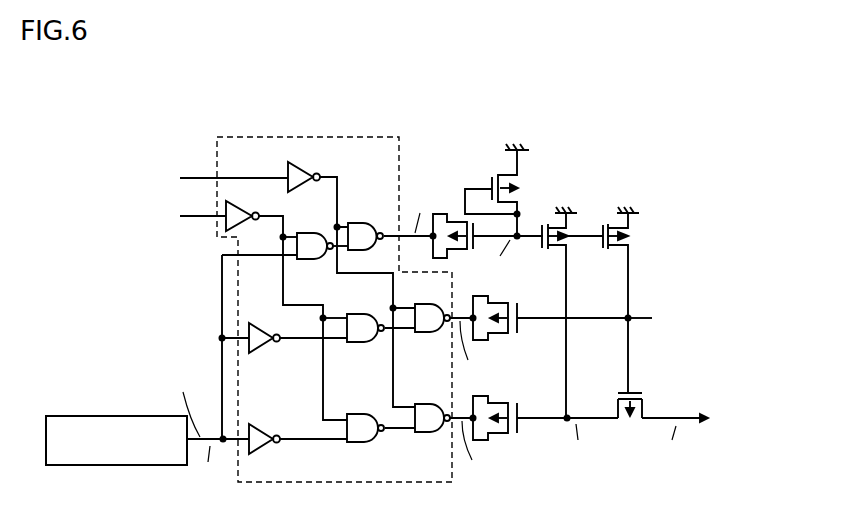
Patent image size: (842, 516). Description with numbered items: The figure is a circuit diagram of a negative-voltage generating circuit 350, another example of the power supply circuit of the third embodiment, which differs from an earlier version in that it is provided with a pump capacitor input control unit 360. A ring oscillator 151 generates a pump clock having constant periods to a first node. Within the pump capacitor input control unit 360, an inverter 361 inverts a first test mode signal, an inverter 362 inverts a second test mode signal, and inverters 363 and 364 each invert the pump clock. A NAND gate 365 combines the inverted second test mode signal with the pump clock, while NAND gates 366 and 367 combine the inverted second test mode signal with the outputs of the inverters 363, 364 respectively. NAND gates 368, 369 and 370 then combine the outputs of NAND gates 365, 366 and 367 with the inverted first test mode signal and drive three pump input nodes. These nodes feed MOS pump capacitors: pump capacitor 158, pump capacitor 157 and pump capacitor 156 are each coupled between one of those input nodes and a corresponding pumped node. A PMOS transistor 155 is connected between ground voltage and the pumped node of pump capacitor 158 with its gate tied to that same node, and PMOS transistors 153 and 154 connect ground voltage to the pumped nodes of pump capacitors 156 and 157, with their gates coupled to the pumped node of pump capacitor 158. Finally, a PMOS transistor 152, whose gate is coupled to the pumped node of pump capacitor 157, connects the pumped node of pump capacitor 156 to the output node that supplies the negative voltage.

The negative-voltage generating circuit 350 is at (690, 100).
The pump capacitor input control unit 360 is at (371, 135).
The inverter 361 is at (300, 170).
The inverter 362 is at (241, 206).
The inverter 363 is at (262, 348).
The inverter 364 is at (263, 449).
The NAND gate 365 is at (308, 262).
The NAND gate 366 is at (360, 344).
The NAND gate 367 is at (356, 444).
The NAND gate 368 is at (364, 221).
The NAND gate 369 is at (424, 334).
The NAND gate 370 is at (427, 435).
The pump capacitor 158 is at (444, 212).
The pump capacitor 157 is at (492, 296).
The pump capacitor 156 is at (492, 398).
The PMOS transistor 155 is at (520, 182).
The PMOS transistor 153 is at (566, 245).
The PMOS transistor 154 is at (632, 242).
The PMOS transistor 152 is at (637, 426).
The ring oscillator 151 is at (138, 466).